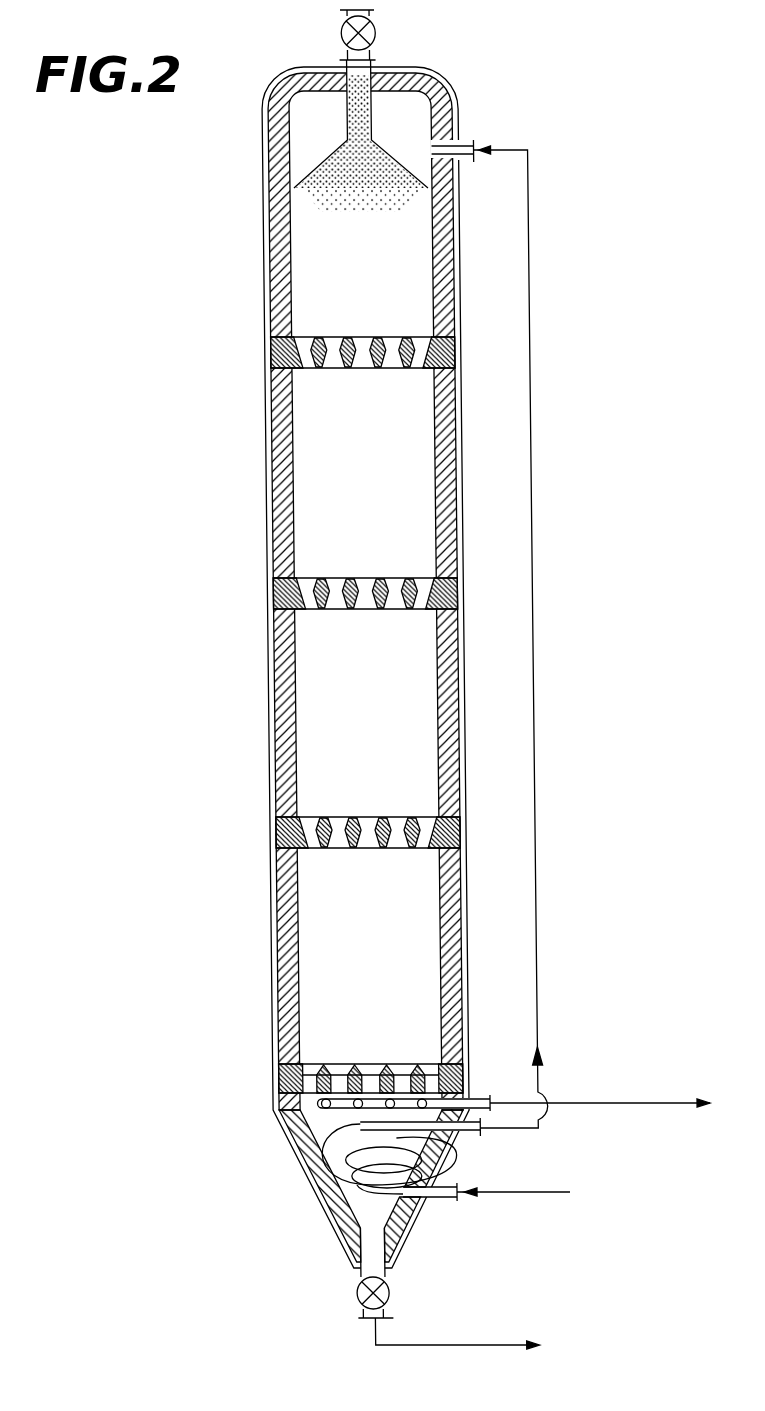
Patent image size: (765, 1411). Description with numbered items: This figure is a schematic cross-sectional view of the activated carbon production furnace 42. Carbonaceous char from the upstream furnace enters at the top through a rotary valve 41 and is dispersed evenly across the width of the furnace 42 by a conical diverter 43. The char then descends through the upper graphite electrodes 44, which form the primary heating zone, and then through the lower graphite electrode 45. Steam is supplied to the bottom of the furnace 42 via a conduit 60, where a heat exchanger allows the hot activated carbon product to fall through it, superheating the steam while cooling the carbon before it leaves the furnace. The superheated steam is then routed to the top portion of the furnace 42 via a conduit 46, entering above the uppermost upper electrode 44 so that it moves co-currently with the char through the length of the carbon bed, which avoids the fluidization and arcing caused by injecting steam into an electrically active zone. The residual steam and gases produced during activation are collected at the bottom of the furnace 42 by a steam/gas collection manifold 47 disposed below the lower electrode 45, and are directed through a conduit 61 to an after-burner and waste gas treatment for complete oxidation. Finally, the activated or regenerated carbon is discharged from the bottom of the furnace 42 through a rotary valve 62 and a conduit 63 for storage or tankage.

The rotary valve 41 is at (377, 37).
The activated carbon production furnace 42 is at (296, 70).
The conical diverter 43 is at (313, 170).
The upper graphite electrodes 44 is at (268, 352).
The lower graphite electrode 45 is at (269, 1078).
The conduit 46 is at (528, 1003).
The steam/gas collection manifold 47 is at (307, 1103).
The conduit 60 is at (512, 1192).
The conduit 61 is at (589, 1103).
The rotary valve 62 is at (344, 1293).
The conduit 63 is at (452, 1345).